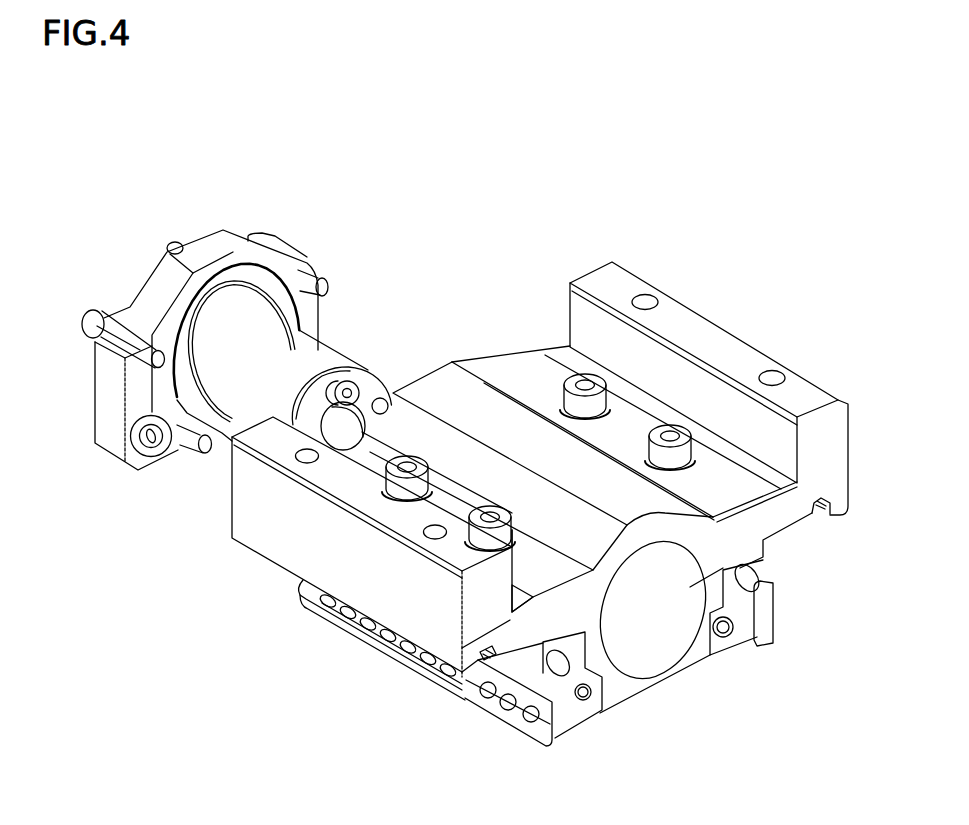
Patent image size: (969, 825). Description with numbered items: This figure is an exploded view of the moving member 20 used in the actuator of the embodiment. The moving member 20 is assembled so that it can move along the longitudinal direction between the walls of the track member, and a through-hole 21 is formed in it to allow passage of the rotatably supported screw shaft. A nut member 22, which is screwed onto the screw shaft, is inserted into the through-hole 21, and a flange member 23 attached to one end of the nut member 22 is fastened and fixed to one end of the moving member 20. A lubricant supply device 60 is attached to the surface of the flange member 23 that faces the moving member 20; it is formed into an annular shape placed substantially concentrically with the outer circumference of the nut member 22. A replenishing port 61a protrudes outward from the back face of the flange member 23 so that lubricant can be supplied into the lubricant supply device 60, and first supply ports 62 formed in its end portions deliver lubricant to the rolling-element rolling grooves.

The moving member 20 is at (797, 388).
The through-hole 21 is at (657, 640).
The nut member 22 is at (327, 355).
The flange member 23 is at (225, 232).
The lubricant supply device 60 is at (272, 277).
The replenishing port 61a is at (172, 242).
The first supply ports 62 is at (170, 455).